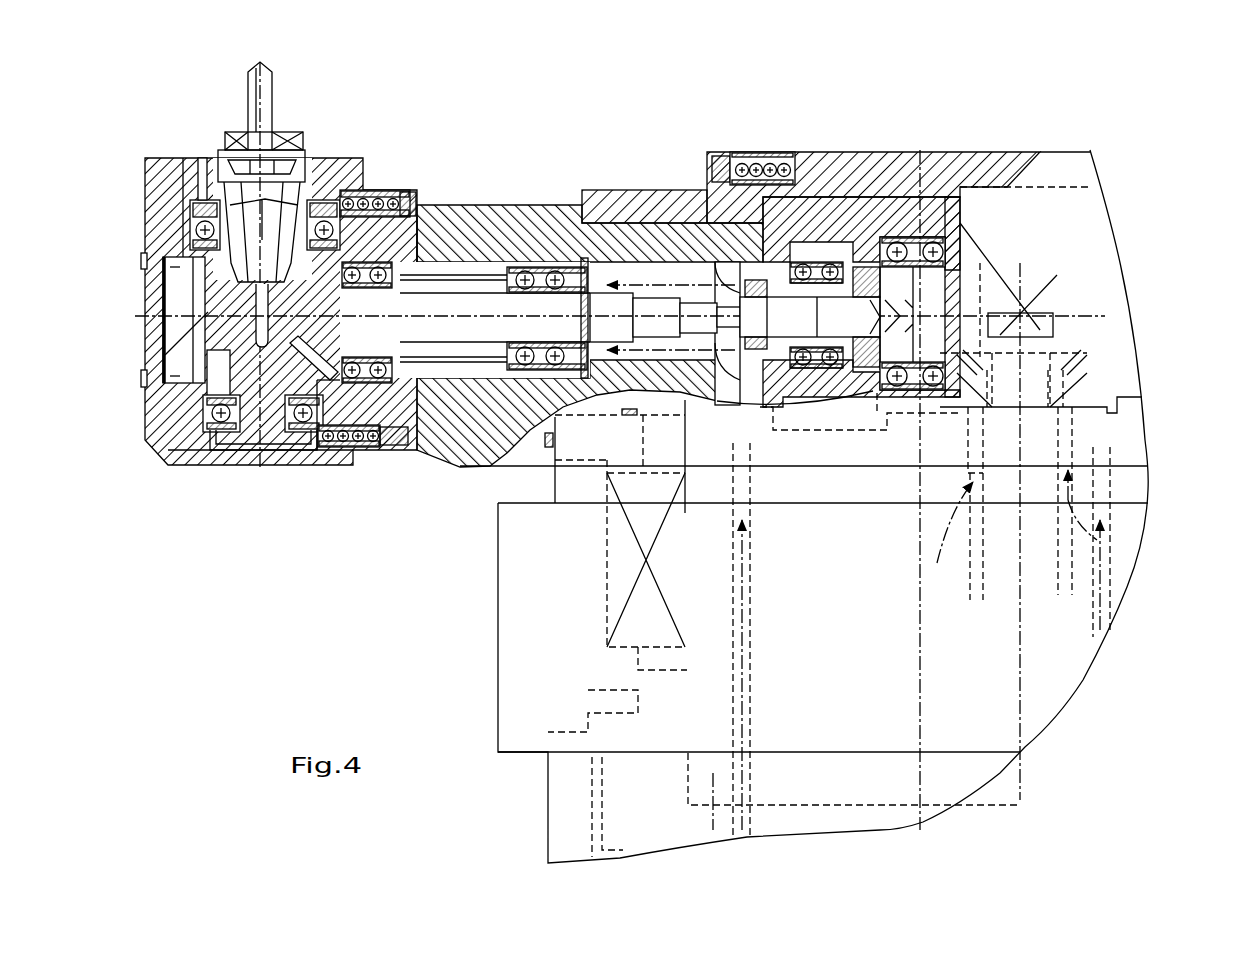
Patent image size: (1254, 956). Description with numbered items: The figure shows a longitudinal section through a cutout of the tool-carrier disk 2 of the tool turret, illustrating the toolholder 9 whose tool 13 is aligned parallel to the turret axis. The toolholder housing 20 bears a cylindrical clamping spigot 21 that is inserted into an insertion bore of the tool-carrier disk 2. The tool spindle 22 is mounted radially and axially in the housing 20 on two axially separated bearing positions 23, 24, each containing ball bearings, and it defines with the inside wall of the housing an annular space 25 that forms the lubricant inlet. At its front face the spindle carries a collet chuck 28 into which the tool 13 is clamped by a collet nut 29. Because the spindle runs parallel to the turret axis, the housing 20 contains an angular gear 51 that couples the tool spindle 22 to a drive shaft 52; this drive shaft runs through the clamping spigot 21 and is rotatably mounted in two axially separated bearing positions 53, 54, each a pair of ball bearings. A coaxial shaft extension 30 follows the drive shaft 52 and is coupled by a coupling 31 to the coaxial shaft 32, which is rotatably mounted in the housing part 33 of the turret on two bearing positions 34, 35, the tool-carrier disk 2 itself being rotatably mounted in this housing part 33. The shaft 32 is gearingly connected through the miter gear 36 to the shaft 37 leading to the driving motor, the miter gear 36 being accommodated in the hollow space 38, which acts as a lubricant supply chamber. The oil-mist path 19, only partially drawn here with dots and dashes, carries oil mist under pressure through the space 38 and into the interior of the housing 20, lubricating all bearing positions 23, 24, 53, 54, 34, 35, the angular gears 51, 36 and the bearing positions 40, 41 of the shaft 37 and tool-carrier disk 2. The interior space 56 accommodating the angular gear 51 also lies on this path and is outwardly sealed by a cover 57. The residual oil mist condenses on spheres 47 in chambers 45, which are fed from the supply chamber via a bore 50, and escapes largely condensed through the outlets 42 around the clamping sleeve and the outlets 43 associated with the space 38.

The tool-carrier disk 2 is at (603, 250).
The toolholder 9 is at (157, 140).
The tool 13 is at (272, 92).
The oil-mist path 19 is at (462, 480).
The toolholder housing 20 is at (328, 460).
The clamping spigot 21 is at (497, 267).
The tool spindle 22 is at (243, 455).
The bearing position 23 is at (197, 225).
The bearing position 24 is at (185, 465).
The annular space 25 is at (437, 430).
The collet chuck 28 is at (330, 160).
The collet nut 29 is at (290, 145).
The coaxial extension 30 is at (660, 305).
The coupling 31 is at (750, 402).
The coaxial shaft 32 is at (833, 385).
The housing part 33 is at (890, 255).
The bearing position 34 is at (882, 200).
The bearing position 35 is at (957, 247).
The miter gear 36 is at (1065, 340).
The shaft 37 is at (1040, 547).
The hollow space 38 is at (972, 208).
The bearing position 40 is at (1058, 433).
The bearing position 41 is at (743, 505).
The outlet 42 is at (385, 193).
The outlet 43 is at (745, 165).
The chamber 45 is at (403, 203).
The sphere 47 is at (300, 458).
The bore 50 is at (833, 296).
The angular gear 51 is at (338, 392).
The drive shaft 52 is at (437, 295).
The bearing position 53 is at (405, 336).
The bearing position 54 is at (525, 335).
The interior space 56 is at (152, 368).
The cover 57 is at (156, 301).